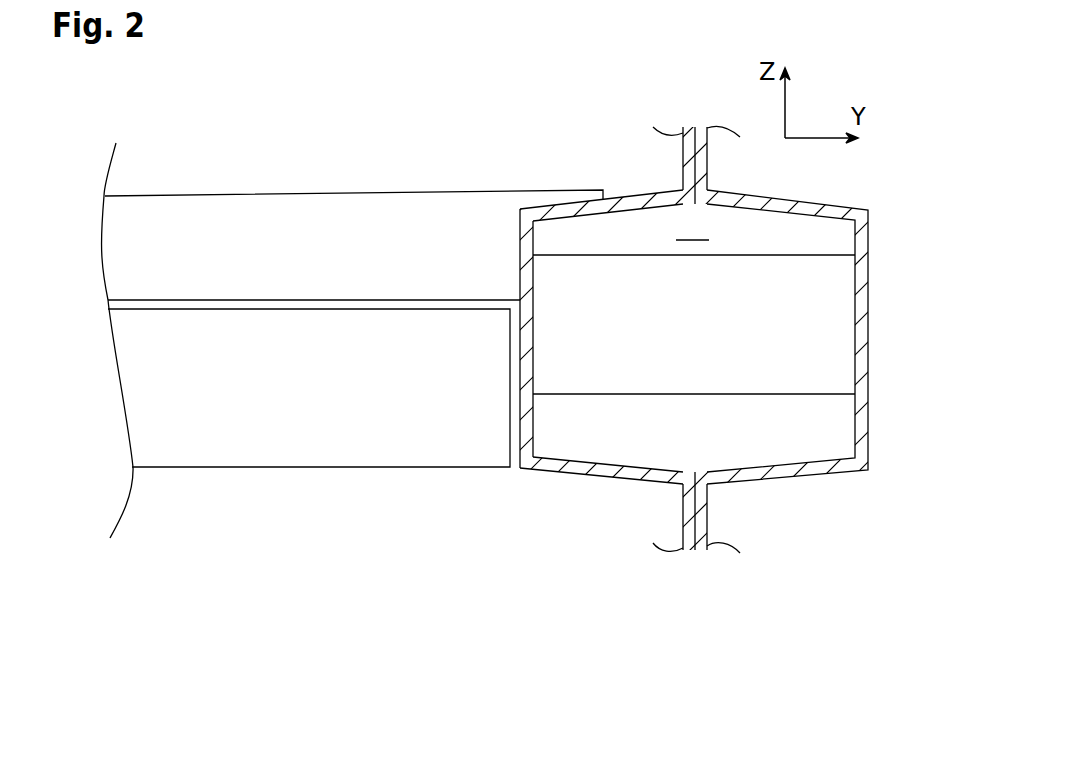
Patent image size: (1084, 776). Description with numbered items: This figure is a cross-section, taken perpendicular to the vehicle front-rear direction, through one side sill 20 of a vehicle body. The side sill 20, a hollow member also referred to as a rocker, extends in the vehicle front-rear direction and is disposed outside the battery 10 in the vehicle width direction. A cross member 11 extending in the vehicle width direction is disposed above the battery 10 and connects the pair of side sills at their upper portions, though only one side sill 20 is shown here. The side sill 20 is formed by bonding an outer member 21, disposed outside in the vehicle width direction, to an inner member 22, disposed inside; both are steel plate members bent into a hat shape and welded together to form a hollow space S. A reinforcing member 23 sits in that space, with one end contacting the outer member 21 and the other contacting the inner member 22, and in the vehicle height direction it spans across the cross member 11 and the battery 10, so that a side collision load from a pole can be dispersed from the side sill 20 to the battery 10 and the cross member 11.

The battery 10 is at (258, 467).
The cross member 11 is at (293, 195).
The side sill 20 is at (542, 388).
The outer member 21 is at (815, 480).
The inner member 22 is at (598, 477).
The reinforcing member 23 is at (625, 263).